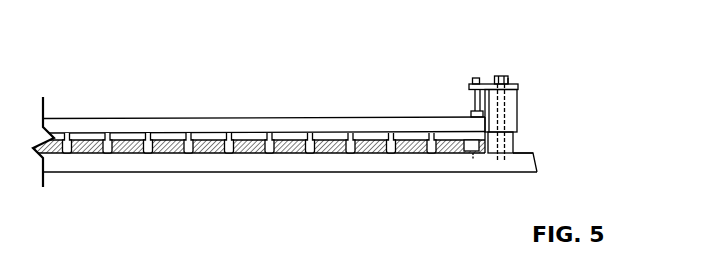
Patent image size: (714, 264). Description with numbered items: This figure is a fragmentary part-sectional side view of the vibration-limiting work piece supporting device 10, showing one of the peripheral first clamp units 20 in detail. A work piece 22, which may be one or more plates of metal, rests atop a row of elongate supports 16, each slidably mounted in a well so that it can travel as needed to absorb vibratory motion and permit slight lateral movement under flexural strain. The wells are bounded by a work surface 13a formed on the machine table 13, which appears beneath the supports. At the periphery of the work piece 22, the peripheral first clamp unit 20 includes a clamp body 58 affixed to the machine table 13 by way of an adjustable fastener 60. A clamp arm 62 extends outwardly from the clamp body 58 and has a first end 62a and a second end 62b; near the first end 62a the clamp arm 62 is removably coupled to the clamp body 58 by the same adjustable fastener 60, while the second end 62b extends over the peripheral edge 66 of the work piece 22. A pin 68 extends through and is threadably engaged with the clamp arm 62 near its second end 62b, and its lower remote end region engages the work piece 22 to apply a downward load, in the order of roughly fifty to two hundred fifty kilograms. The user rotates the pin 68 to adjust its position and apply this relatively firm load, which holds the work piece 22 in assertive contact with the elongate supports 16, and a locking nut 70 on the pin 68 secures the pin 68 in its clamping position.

The vibration-limiting work piece supporting device 10 is at (316, 109).
The machine table 13 is at (321, 182).
The work surface 13a is at (538, 154).
The elongate support 16 is at (341, 153).
The peripheral first clamp unit 20 is at (503, 82).
The work piece 22 is at (345, 118).
The clamp body 58 is at (518, 97).
The adjustable fastener 60 is at (502, 78).
The clamp arm 62 is at (488, 78).
The first end 62a is at (506, 79).
The second end 62b is at (469, 84).
The peripheral edge 66 is at (468, 151).
The pin 68 is at (469, 97).
The locking nut 70 is at (481, 76).